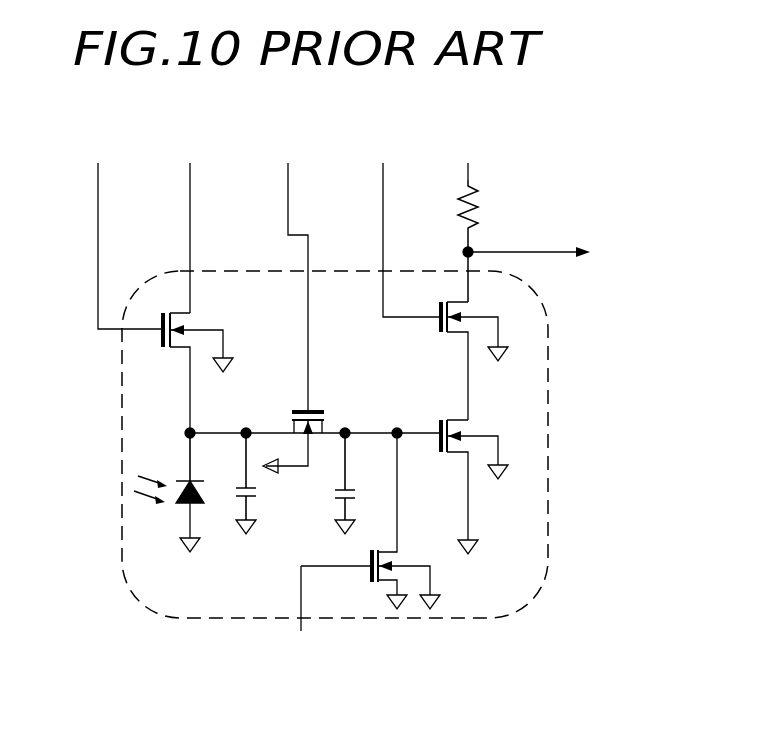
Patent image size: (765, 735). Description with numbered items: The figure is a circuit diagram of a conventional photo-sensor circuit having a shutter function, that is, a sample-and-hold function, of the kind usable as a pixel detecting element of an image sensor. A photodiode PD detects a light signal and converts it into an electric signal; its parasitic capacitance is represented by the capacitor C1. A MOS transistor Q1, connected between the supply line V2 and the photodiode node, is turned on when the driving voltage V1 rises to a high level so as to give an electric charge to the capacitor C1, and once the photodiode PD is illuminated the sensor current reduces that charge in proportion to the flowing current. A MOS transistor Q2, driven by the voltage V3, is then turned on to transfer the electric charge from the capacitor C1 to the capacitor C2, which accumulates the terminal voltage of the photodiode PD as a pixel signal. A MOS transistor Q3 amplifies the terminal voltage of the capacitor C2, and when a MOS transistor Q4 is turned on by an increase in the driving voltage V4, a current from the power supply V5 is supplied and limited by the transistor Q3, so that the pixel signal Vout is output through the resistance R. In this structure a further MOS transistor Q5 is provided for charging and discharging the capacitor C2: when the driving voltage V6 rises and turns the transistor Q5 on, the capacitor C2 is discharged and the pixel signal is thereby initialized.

The driving voltage V1 is at (118, 220).
The voltage terminal V2 is at (192, 212).
The driving voltage V3 is at (288, 261).
The driving voltage V4 is at (399, 214).
The power supply V5 is at (469, 145).
The driving voltage V6 is at (300, 624).
The resistance R is at (482, 241).
The pixel signal Vout is at (554, 254).
The MOS transistor Q1 is at (195, 361).
The MOS transistor Q2 is at (305, 427).
The MOS transistor Q3 is at (467, 472).
The MOS transistor Q4 is at (455, 355).
The MOS transistor Q5 is at (370, 521).
The photodiode PD is at (169, 492).
The capacitor C1 is at (237, 483).
The capacitor C2 is at (333, 483).